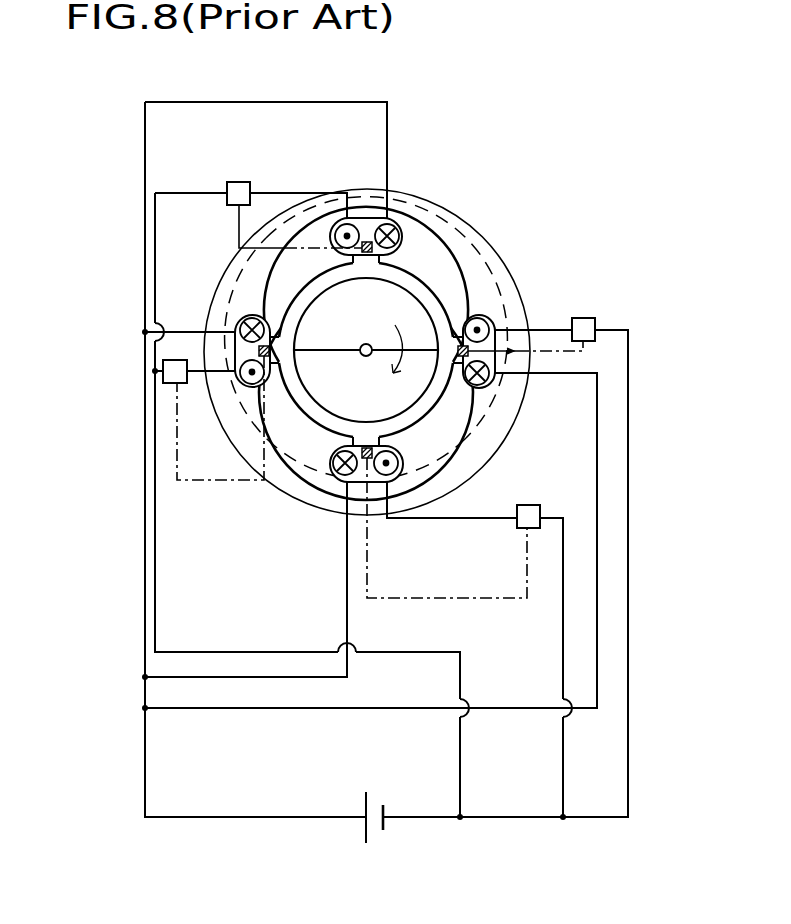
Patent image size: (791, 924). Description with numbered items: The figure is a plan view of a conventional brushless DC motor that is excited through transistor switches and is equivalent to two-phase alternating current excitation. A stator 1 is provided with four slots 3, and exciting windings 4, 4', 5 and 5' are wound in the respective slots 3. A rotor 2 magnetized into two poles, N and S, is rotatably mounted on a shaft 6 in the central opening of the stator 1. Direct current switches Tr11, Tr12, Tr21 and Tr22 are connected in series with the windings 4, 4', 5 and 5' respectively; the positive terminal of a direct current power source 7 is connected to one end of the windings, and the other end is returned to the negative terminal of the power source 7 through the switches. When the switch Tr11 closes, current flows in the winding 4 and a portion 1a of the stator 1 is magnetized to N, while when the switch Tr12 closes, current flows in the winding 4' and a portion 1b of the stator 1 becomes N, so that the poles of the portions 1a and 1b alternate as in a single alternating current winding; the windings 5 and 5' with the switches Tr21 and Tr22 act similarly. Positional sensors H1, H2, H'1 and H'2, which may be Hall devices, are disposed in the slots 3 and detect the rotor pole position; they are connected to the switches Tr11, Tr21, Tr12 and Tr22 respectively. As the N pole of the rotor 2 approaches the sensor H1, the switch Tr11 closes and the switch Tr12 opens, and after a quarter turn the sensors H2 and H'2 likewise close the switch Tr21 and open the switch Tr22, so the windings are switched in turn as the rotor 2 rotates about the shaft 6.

The stator 1 is at (458, 213).
The portion of the stator 1a is at (290, 282).
The portion of the stator 1b is at (322, 494).
The rotor 2 is at (323, 388).
The slots 3 is at (391, 223).
The exciting winding 4 is at (352, 265).
The exciting winding 4' is at (443, 406).
The exciting winding 5 is at (405, 316).
The exciting winding 5' is at (260, 376).
The shaft 6 is at (361, 347).
The direct current power source 7 is at (376, 835).
The positional sensor H1 is at (440, 406).
The positional sensor H2 is at (360, 451).
The positional sensor H'1 is at (159, 413).
The positional sensor H'2 is at (347, 249).
The direct current switch Tr11 is at (583, 318).
The direct current switch Tr12 is at (160, 380).
The direct current switch Tr21 is at (542, 510).
The direct current switch Tr22 is at (216, 212).